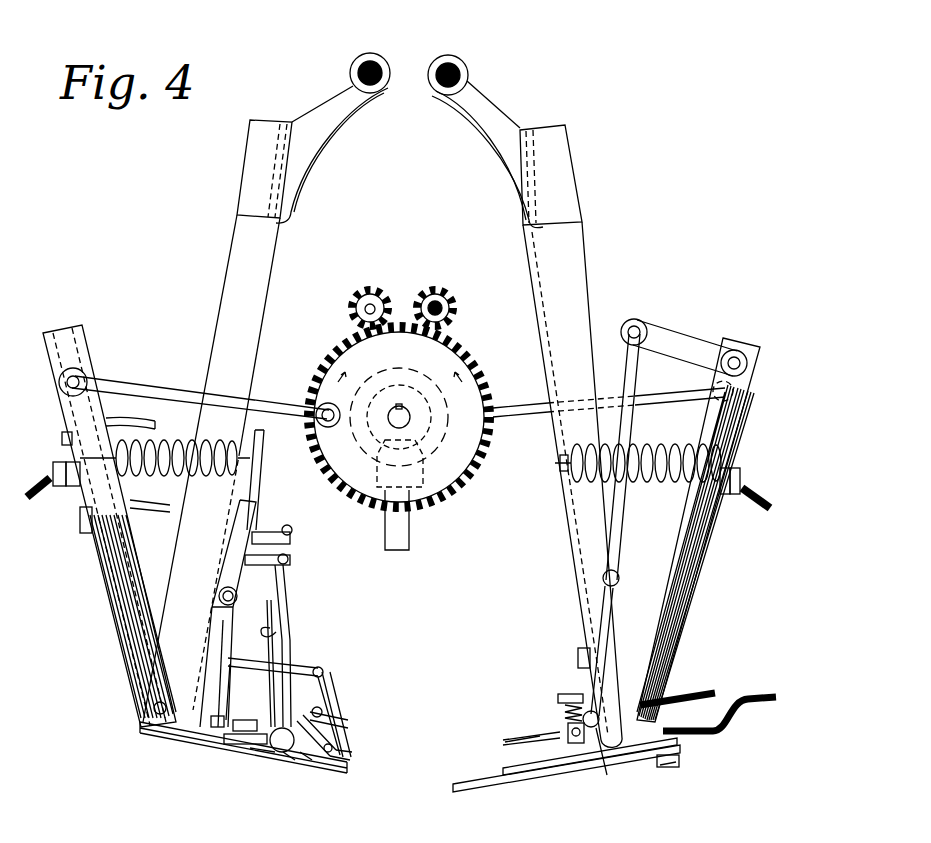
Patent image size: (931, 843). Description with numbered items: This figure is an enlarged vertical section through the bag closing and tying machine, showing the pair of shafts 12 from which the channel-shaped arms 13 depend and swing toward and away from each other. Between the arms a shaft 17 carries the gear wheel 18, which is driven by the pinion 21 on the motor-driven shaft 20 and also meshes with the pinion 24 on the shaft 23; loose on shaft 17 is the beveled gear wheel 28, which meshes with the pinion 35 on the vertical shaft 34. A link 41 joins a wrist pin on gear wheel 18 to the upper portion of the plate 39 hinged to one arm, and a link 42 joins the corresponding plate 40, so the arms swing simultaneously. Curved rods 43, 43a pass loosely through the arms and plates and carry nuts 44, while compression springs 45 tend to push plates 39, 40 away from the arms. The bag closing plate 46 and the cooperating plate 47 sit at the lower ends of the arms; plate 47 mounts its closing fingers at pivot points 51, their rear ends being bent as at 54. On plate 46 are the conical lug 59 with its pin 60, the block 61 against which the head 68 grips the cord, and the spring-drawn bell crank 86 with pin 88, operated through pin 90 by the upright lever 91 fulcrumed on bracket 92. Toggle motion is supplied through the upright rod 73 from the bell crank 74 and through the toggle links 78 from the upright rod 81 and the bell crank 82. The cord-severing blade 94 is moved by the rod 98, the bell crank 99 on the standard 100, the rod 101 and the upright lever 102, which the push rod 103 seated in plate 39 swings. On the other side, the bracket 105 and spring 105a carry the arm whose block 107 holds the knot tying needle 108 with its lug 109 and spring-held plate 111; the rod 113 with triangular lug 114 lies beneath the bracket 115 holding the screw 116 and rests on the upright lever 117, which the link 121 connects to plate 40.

The shafts 12 is at (446, 68).
The arms 13 is at (232, 243).
The shaft 17 is at (407, 420).
The gear wheel 18 is at (340, 355).
The shaft 20 is at (450, 305).
The pinion 21 is at (432, 300).
The shaft 23 is at (375, 300).
The pinion 24 is at (350, 306).
The beveled gear wheel 28 is at (420, 457).
The shaft 34 is at (400, 550).
The pinion 35 is at (420, 468).
The plate 39 is at (122, 608).
The plate 40 is at (672, 605).
The link 41 is at (148, 385).
The link 42 is at (528, 403).
The curved rod 43 is at (33, 498).
The curved rod 43a is at (752, 515).
The nuts 44 is at (60, 462).
The compression springs 45 is at (140, 478).
The bag closing plate 46 is at (200, 760).
The plate 47 is at (560, 785).
The pivot points 51 is at (680, 765).
The bent rear ends 54 is at (762, 715).
The lug 59 is at (280, 760).
The pin 60 is at (268, 695).
The block 61 is at (287, 726).
The head 68 is at (300, 755).
The upright rod 73 is at (300, 648).
The bell crank 74 is at (268, 538).
The toggle links 78 is at (243, 722).
The upright rod 81 is at (285, 625).
The bell crank 82 is at (292, 560).
The bell crank 86 is at (250, 745).
The pin 88 is at (265, 755).
The pin 90 is at (218, 735).
The upright lever 91 is at (232, 575).
The bracket 92 is at (223, 602).
The blade 94 is at (305, 722).
The rod 98 is at (350, 746).
The bell crank 99 is at (348, 718).
The standard 100 is at (335, 697).
The rod 101 is at (330, 668).
The upright lever 102 is at (258, 477).
The push rod 103 is at (265, 430).
The bracket 105 is at (575, 692).
The spring 105a is at (568, 709).
The block 107 is at (585, 748).
The knot tying needle 108 is at (584, 726).
The lug 109 is at (540, 741).
The spring-held plate 111 is at (520, 738).
The rod 113 is at (668, 768).
The triangular lug 114 is at (683, 700).
The bracket 115 is at (585, 650).
The screw 116 is at (606, 745).
The upright lever 117 is at (608, 548).
The link 121 is at (683, 343).